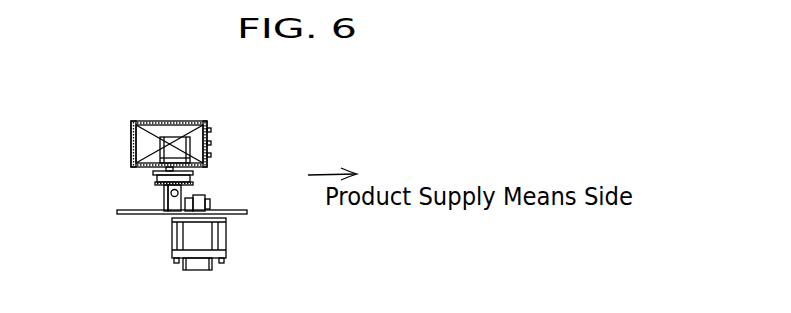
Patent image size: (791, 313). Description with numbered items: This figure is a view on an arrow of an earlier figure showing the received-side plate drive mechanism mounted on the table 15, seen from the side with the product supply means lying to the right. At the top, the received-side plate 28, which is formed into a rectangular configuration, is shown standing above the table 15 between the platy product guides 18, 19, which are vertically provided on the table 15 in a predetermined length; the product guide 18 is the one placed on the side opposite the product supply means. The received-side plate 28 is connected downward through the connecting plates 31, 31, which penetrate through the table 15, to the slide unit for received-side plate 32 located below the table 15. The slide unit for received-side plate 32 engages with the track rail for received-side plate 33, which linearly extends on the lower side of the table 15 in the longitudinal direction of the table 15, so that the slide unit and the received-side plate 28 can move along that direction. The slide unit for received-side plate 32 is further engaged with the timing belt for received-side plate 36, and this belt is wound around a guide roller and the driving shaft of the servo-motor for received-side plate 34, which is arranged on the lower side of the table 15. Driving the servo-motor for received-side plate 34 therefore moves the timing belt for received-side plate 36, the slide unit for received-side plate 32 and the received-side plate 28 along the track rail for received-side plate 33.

The table 15 is at (150, 176).
The product guide 18 is at (131, 142).
The product guide 19 is at (211, 143).
The received-side plate 28 is at (166, 130).
The connecting plate 31 is at (195, 175).
The slide unit for received-side plate 32 is at (167, 200).
The track rail for received-side plate 33 is at (157, 214).
The servo-motor for received-side plate 34 is at (227, 233).
The timing belt for received-side plate 36 is at (212, 200).